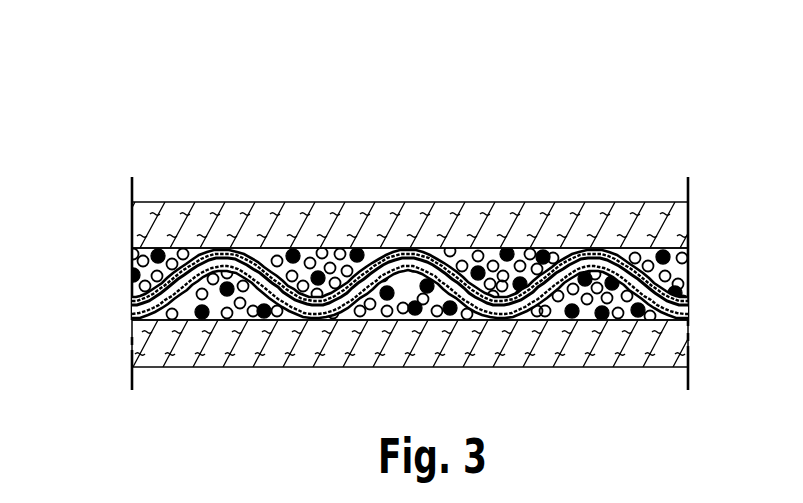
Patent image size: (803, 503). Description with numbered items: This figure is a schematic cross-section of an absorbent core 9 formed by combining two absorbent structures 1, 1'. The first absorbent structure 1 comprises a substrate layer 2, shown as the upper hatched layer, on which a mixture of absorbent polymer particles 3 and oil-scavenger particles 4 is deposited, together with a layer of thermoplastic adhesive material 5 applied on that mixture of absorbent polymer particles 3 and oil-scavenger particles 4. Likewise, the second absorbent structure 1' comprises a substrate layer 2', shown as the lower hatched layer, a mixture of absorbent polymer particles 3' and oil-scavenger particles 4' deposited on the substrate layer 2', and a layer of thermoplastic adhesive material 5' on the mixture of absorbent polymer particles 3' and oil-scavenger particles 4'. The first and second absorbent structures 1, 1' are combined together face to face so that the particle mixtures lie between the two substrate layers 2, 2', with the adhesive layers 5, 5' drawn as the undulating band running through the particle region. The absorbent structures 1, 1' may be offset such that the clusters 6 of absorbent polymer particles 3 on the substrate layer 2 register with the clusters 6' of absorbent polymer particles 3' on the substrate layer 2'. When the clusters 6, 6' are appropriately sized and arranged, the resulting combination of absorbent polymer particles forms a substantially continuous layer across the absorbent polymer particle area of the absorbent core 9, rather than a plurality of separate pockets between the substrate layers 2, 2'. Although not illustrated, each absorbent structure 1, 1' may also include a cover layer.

The absorbent core 9 is at (168, 130).
The first absorbent structure 1 is at (381, 291).
The second absorbent structure 1' is at (377, 354).
The substrate layer 2 is at (407, 185).
The substrate layer 2' is at (400, 389).
The absorbent polymer particles 3 is at (408, 219).
The absorbent polymer particles 3' is at (414, 301).
The oil-scavenger particles 4 is at (398, 220).
The oil-scavenger particles 4' is at (438, 299).
The layer of thermoplastic adhesive material 5 is at (410, 227).
The layer of thermoplastic adhesive material 5' is at (410, 292).
The clusters 6 is at (410, 200).
The clusters 6' is at (410, 375).